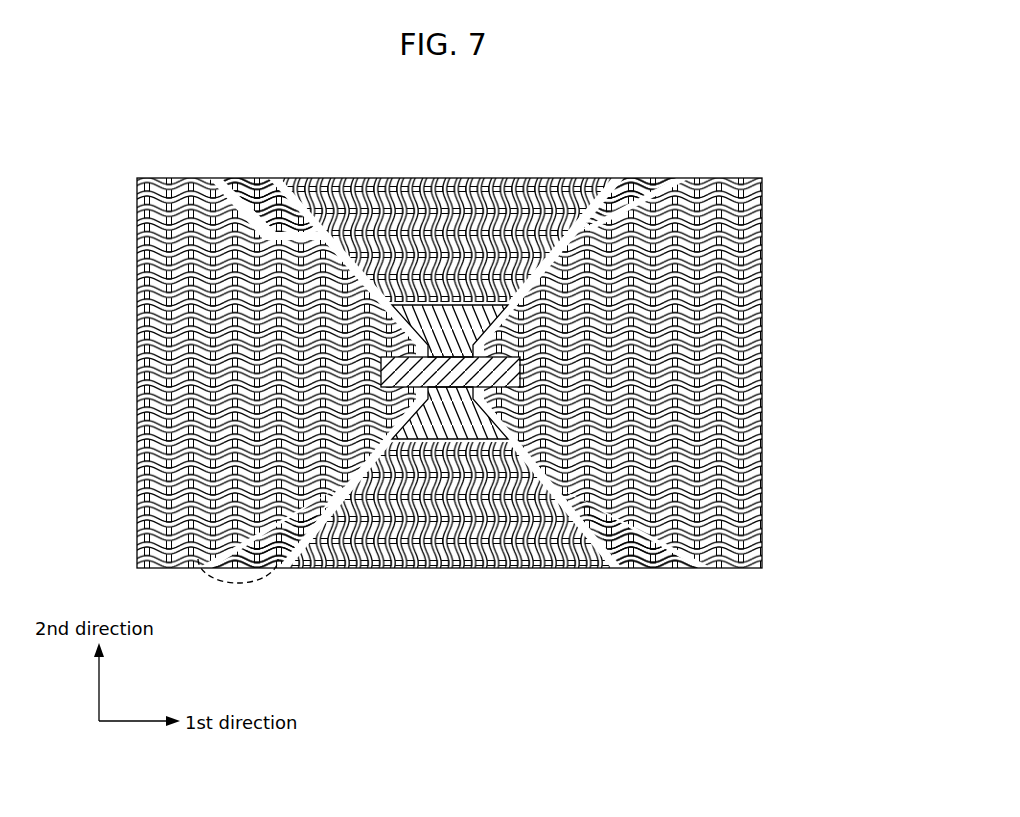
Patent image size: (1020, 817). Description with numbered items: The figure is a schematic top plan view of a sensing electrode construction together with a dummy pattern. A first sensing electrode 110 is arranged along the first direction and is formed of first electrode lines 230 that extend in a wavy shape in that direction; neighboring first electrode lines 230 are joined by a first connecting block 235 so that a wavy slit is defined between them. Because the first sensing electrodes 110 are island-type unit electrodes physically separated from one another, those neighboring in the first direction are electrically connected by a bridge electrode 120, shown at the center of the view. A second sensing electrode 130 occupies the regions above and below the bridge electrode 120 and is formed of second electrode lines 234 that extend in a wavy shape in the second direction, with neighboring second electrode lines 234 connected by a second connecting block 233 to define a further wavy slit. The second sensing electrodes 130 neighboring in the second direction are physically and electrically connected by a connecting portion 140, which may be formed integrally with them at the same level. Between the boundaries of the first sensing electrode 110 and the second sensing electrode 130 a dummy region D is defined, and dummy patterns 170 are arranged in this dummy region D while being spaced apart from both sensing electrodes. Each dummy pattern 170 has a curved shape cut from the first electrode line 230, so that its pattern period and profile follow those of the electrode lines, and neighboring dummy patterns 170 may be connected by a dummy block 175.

The first sensing electrode 110 is at (130, 176).
The bridge electrode 120 is at (411, 378).
The second sensing electrode 130 is at (622, 173).
The connecting portion 140 is at (615, 322).
The dummy pattern 170 is at (322, 567).
The dummy block 175 is at (227, 580).
The first electrode line 230 is at (707, 565).
The second connecting block 233 is at (470, 540).
The second electrode line 234 is at (587, 563).
The first connecting block 235 is at (758, 547).
The dummy region D is at (265, 579).